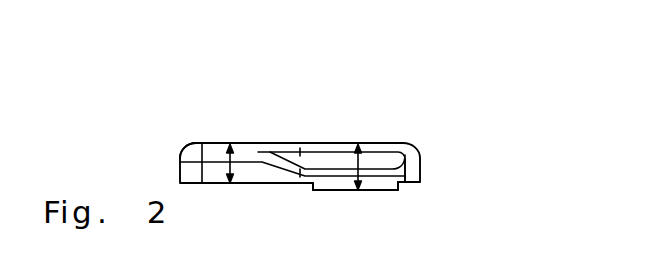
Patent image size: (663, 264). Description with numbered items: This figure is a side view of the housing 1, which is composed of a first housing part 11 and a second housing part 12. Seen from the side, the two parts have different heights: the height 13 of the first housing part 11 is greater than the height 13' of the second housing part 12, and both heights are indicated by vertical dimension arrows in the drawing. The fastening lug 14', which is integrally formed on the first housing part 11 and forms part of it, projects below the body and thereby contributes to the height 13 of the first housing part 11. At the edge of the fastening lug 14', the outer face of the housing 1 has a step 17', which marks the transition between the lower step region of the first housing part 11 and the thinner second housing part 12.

The housing 1 is at (434, 141).
The first housing part 11 is at (420, 172).
The second housing part 12 is at (188, 152).
The height of the first housing part 13 is at (389, 144).
The height of the second housing part 13' is at (200, 139).
The fastening lug 14' is at (381, 216).
The step 17' is at (275, 209).